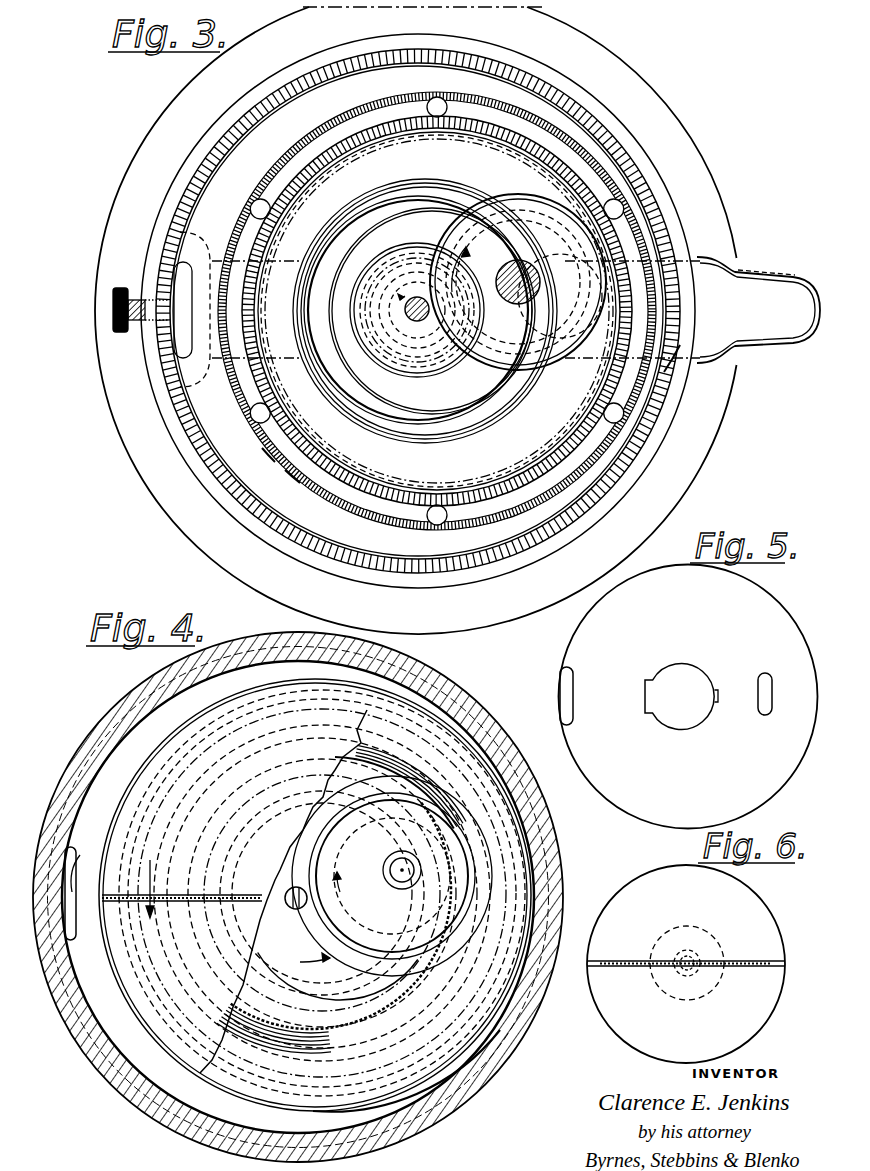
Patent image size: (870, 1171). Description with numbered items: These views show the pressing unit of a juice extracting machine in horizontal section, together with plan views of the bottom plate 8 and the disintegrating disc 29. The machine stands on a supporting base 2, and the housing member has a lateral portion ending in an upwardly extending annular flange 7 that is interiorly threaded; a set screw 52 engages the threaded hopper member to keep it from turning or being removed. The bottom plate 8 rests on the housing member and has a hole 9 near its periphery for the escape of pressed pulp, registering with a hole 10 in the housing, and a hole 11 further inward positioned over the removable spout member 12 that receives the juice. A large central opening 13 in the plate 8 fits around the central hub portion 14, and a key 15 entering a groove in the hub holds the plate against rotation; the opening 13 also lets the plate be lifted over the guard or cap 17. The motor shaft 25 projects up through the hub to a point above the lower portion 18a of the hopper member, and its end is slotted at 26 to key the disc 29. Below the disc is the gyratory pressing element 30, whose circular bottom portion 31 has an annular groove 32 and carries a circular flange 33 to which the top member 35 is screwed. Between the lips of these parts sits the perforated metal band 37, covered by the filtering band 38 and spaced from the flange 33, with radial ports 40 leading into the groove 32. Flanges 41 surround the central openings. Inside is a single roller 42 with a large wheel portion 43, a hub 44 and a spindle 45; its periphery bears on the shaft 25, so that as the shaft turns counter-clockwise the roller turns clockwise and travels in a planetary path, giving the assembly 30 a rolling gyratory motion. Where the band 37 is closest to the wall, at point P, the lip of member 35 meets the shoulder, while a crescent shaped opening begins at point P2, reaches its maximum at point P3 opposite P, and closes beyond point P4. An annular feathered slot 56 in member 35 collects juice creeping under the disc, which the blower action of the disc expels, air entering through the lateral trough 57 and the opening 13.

In FIG. 3, the supporting base 2 is at (150, 156).
In FIG. 3, the annular flange 7 is at (160, 191).
In FIG. 3, the bottom plate 8 is at (200, 398).
In FIG. 5, the bottom plate 8 is at (688, 697).
In FIG. 3, the hole 9 is at (177, 277).
In FIG. 5, the hole 9 is at (560, 692).
In FIG. 3, the hole 10 is at (200, 299).
In FIG. 5, the hole 11 is at (765, 713).
In FIG. 3, the spout member 12 is at (758, 310).
In FIG. 5, the central opening 13 is at (682, 727).
In FIG. 3, the central hub portion 14 is at (415, 378).
In FIG. 5, the key 15 is at (714, 697).
In FIG. 3, the guard or cap 17 is at (437, 380).
In FIG. 4, the guard or cap 17 is at (308, 965).
In FIG. 3, the lower portion of the member 18a is at (672, 390).
In FIG. 4, the lower portion of the member 18a is at (556, 843).
In FIG. 3, the motor shaft 25 is at (416, 321).
In FIG. 4, the motor shaft 25 is at (294, 908).
In FIG. 4, the slot 26 is at (310, 949).
In FIG. 4, the disintegrating disc 29 is at (354, 736).
In FIG. 6, the disintegrating disc 29 is at (686, 964).
In FIG. 3, the gyratory pressing element 30 is at (470, 167).
In FIG. 4, the gyratory pressing element 30 is at (338, 1085).
In FIG. 3, the circular bottom portion 31 is at (425, 311).
In FIG. 3, the annular groove 32 is at (378, 118).
In FIG. 3, the circular flange 33 is at (437, 311).
In FIG. 4, the top member 35 is at (312, 1037).
In FIG. 3, the perforated metal band 37 is at (266, 449).
In FIG. 3, the filtering band 38 is at (290, 472).
In FIG. 3, the radial ports 40 is at (440, 98).
In FIG. 3, the flanges 41 is at (442, 420).
In FIG. 4, the flanges 41 is at (392, 978).
In FIG. 3, the roller 42 is at (510, 268).
In FIG. 4, the roller 42 is at (402, 951).
In FIG. 3, the wheel portion 43 is at (486, 370).
In FIG. 4, the wheel portion 43 is at (370, 951).
In FIG. 3, the hub 44 is at (520, 305).
In FIG. 4, the hub 44 is at (401, 883).
In FIG. 4, the spindle 45 is at (399, 864).
In FIG. 3, the set screw 52 is at (112, 311).
In FIG. 4, the annular feathered slot 56 is at (421, 991).
In FIG. 3, the lateral trough 57 is at (298, 256).
In FIG. 4, the point P is at (537, 900).
In FIG. 4, the point P2 is at (527, 810).
In FIG. 4, the point P3 is at (68, 852).
In FIG. 4, the point P4 is at (494, 1033).